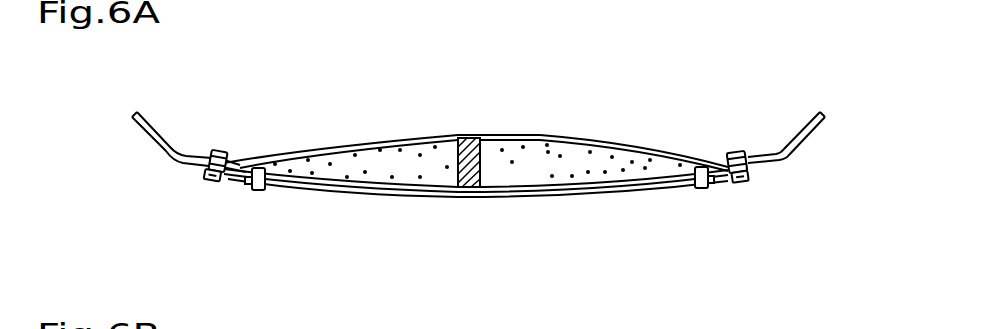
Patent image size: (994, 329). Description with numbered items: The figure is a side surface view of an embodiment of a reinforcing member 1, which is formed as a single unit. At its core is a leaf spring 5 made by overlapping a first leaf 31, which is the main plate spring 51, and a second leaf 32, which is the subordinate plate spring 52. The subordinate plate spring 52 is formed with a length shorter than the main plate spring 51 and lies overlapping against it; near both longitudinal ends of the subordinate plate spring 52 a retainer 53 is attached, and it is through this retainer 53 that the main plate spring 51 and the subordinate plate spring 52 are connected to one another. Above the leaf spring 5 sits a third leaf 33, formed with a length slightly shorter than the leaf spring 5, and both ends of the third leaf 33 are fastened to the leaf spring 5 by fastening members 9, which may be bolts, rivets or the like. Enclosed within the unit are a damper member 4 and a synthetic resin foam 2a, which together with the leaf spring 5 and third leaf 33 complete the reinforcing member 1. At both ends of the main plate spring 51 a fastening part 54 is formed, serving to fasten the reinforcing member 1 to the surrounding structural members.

The reinforcing member 1 is at (437, 116).
The synthetic resin foam 2a is at (448, 170).
The damper member 4 is at (468, 136).
The leaf spring 5 is at (476, 249).
The fastening member 9 is at (219, 150).
The first leaf 31 is at (590, 190).
The second leaf 32 is at (522, 279).
The third leaf 33 is at (575, 138).
The main plate spring 51 is at (476, 226).
The subordinate plate spring 52 is at (478, 231).
The retainer 53 is at (253, 190).
The fastening part 54 is at (153, 137).